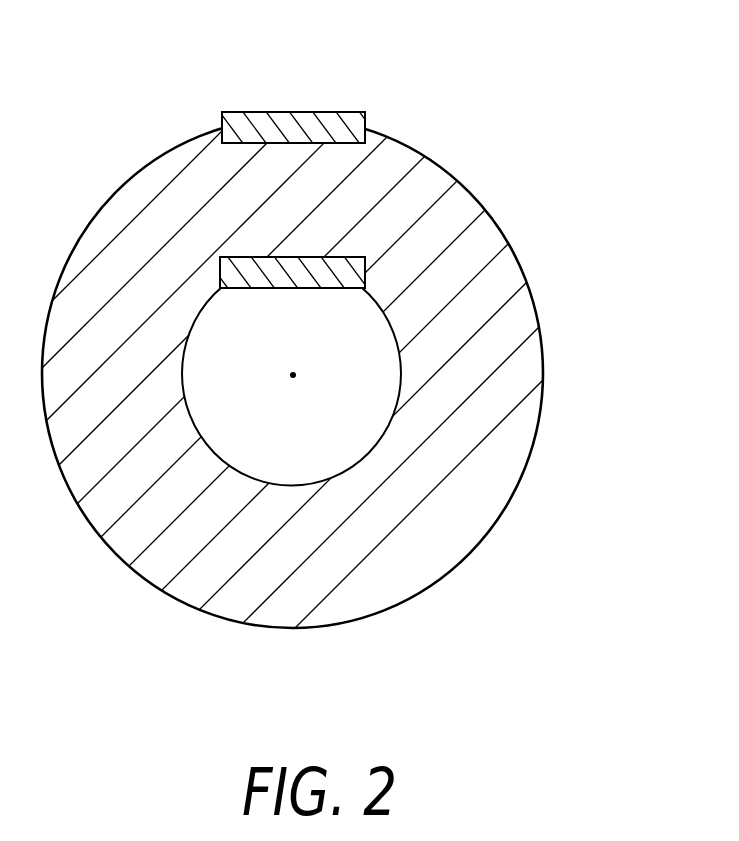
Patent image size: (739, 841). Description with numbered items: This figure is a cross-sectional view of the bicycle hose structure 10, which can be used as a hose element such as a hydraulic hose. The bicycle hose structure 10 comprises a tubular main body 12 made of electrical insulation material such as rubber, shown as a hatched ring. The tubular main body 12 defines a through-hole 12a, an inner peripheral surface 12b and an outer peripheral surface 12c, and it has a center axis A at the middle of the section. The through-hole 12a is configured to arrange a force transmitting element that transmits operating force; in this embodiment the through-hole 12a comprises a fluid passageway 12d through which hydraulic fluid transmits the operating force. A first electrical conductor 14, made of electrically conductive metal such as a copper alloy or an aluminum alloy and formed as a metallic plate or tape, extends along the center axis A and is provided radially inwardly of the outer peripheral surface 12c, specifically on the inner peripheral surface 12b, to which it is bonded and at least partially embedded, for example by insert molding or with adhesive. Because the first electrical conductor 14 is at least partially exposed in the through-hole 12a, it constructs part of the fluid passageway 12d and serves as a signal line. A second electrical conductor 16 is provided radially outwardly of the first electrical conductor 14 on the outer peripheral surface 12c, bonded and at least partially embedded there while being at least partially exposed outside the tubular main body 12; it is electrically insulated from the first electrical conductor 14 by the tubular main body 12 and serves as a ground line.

The bicycle hose structure 10 is at (477, 88).
The tubular main body 12 is at (470, 238).
The through-hole 12a is at (376, 414).
The inner peripheral surface 12b is at (401, 375).
The outer peripheral surface 12c is at (537, 299).
The fluid passageway 12d is at (343, 458).
The first electrical conductor 14 is at (288, 278).
The second electrical conductor 16 is at (287, 128).
The center axis A is at (293, 380).